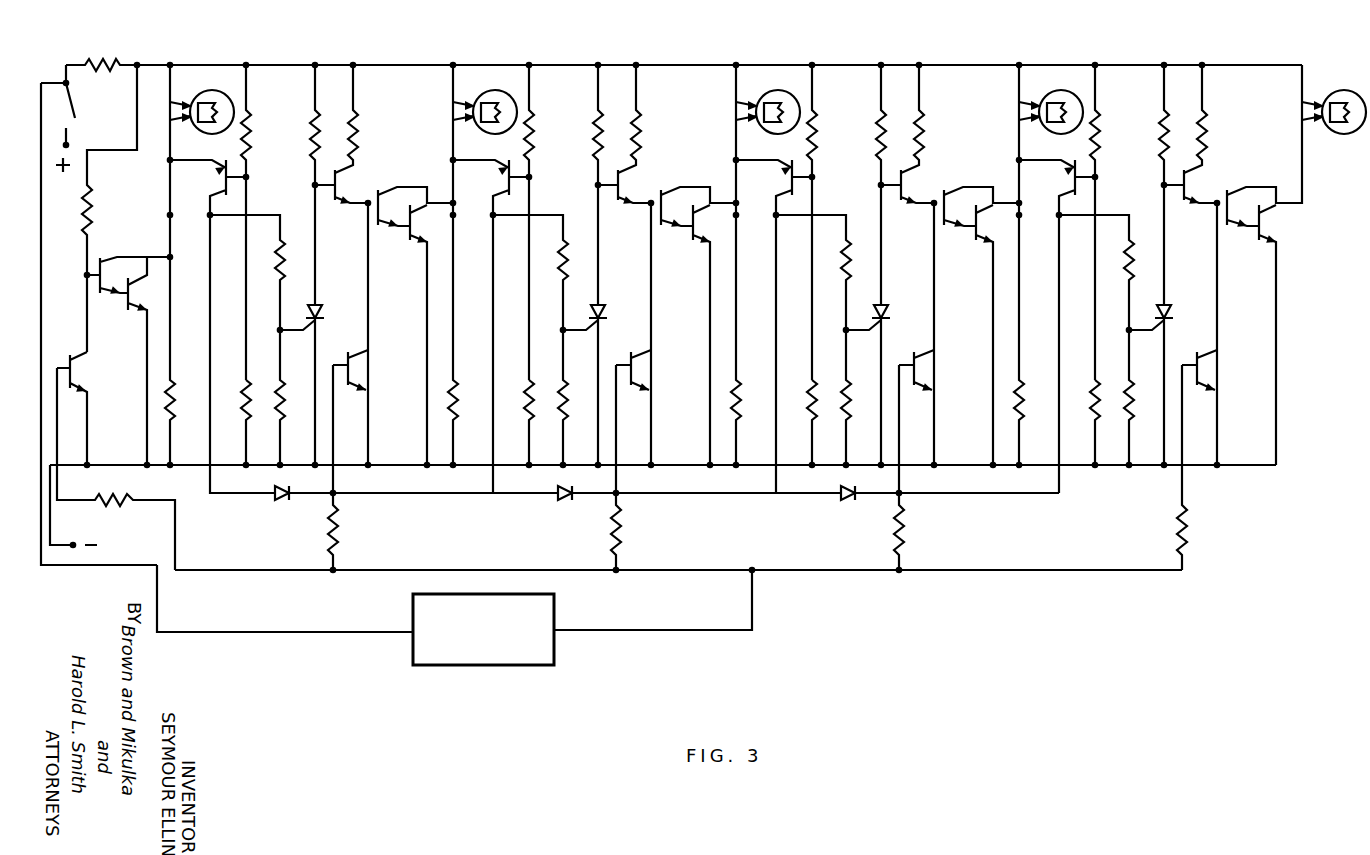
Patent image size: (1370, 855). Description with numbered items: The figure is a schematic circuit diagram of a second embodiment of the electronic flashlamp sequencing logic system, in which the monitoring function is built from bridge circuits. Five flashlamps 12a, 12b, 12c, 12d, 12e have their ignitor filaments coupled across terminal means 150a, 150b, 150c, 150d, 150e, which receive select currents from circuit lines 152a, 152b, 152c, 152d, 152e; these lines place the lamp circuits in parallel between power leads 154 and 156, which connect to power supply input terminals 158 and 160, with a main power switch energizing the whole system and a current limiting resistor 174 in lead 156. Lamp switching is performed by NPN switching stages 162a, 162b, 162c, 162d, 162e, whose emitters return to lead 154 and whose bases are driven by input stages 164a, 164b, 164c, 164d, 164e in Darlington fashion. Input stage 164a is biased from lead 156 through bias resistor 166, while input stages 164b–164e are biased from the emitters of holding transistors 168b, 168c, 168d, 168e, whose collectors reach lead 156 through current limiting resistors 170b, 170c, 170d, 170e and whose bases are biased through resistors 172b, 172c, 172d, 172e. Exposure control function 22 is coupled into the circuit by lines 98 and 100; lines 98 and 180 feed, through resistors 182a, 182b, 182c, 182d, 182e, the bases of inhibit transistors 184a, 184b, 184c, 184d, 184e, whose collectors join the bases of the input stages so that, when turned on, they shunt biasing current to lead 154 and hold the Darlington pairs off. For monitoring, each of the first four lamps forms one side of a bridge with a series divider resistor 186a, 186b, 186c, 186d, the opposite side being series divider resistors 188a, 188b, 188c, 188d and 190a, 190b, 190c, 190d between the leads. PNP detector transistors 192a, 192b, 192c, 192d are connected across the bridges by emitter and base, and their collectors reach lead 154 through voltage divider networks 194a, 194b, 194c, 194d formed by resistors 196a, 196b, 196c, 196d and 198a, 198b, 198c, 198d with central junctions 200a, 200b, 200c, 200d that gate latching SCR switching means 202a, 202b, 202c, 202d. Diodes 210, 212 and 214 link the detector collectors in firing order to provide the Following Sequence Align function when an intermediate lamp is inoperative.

The flashlamp 12a is at (228, 140).
The flashlamp 12b is at (502, 88).
The flashlamp 12c is at (785, 88).
The flashlamp 12d is at (1068, 88).
The flashlamp 12e is at (1358, 88).
The exposure control function 22 is at (475, 668).
The line 98 is at (666, 632).
The line 100 is at (342, 636).
The terminal means 150a is at (174, 100).
The terminal means 150b is at (450, 124).
The terminal means 150c is at (733, 124).
The terminal means 150d is at (1016, 124).
The terminal means 150e is at (1300, 124).
The circuit line 152a is at (170, 141).
The circuit line 152b is at (455, 141).
The circuit line 152c is at (738, 141).
The circuit line 152d is at (1021, 141).
The circuit line 152e is at (1305, 141).
The power lead 154 is at (698, 468).
The power lead 156 is at (943, 64).
The power supply input terminal 158 is at (73, 548).
The power supply input terminal 160 is at (72, 124).
The NPN transistor switching stage 162a is at (134, 313).
The NPN transistor switching stage 162b is at (412, 240).
The NPN transistor switching stage 162c is at (695, 240).
The NPN transistor switching stage 162d is at (978, 240).
The NPN transistor switching stage 162e is at (1261, 240).
The input NPN transistor stage 164a is at (98, 260).
The input NPN transistor stage 164b is at (368, 230).
The input NPN transistor stage 164c is at (651, 230).
The input NPN transistor stage 164d is at (934, 230).
The input NPN transistor stage 164e is at (1217, 230).
The bias resistor 166 is at (90, 195).
The NPN holding transistor 168b is at (342, 184).
The NPN holding transistor 168c is at (626, 184).
The NPN holding transistor 168d is at (909, 184).
The NPN holding transistor 168e is at (1192, 184).
The current limiting resistor 170b is at (354, 116).
The current limiting resistor 170c is at (638, 116).
The current limiting resistor 170d is at (921, 116).
The current limiting resistor 170e is at (1204, 116).
The resistor 172b is at (310, 148).
The resistor 172c is at (594, 148).
The resistor 172d is at (877, 148).
The resistor 172e is at (1160, 148).
The current limiting resistor 174 is at (108, 62).
The line 180 is at (456, 568).
The resistor 182a is at (134, 504).
The resistor 182b is at (337, 512).
The resistor 182c is at (620, 512).
The resistor 182d is at (903, 512).
The resistor 182e is at (1186, 512).
The NPN inhibit transistor 184a is at (78, 363).
The NPN inhibit transistor 184b is at (358, 364).
The NPN inhibit transistor 184c is at (641, 364).
The NPN inhibit transistor 184d is at (924, 364).
The NPN inhibit transistor 184e is at (1207, 364).
The divider resistor 186a is at (162, 404).
The divider resistor 186b is at (444, 404).
The divider resistor 186c is at (727, 404).
The divider resistor 186d is at (1010, 404).
The divider resistor 188a is at (245, 127).
The divider resistor 188b is at (529, 127).
The divider resistor 188c is at (812, 127).
The divider resistor 188d is at (1095, 127).
The divider resistor 190a is at (242, 420).
The divider resistor 190b is at (525, 420).
The divider resistor 190c is at (808, 420).
The divider resistor 190d is at (1091, 420).
The PNP detector transistor 192a is at (220, 181).
The PNP detector transistor 192b is at (504, 181).
The PNP detector transistor 192c is at (787, 181).
The PNP detector transistor 192d is at (1070, 181).
The voltage divider network 194a is at (291, 218).
The voltage divider network 194b is at (574, 218).
The voltage divider network 194c is at (857, 218).
The voltage divider network 194d is at (1140, 218).
The resistor 196a is at (276, 250).
The resistor 196b is at (559, 250).
The resistor 196c is at (842, 250).
The resistor 196d is at (1125, 250).
The resistor 198a is at (287, 425).
The resistor 198b is at (570, 425).
The resistor 198c is at (853, 425).
The resistor 198d is at (1136, 425).
The central junction 200a is at (293, 330).
The central junction 200b is at (576, 330).
The central junction 200c is at (859, 330).
The central junction 200d is at (1142, 330).
The gate controlled switching means 202a is at (322, 312).
The gate controlled switching means 202b is at (605, 312).
The gate controlled switching means 202c is at (888, 312).
The gate controlled switching means 202d is at (1171, 312).
The diode 210 is at (285, 500).
The diode 212 is at (575, 500).
The diode 214 is at (851, 500).